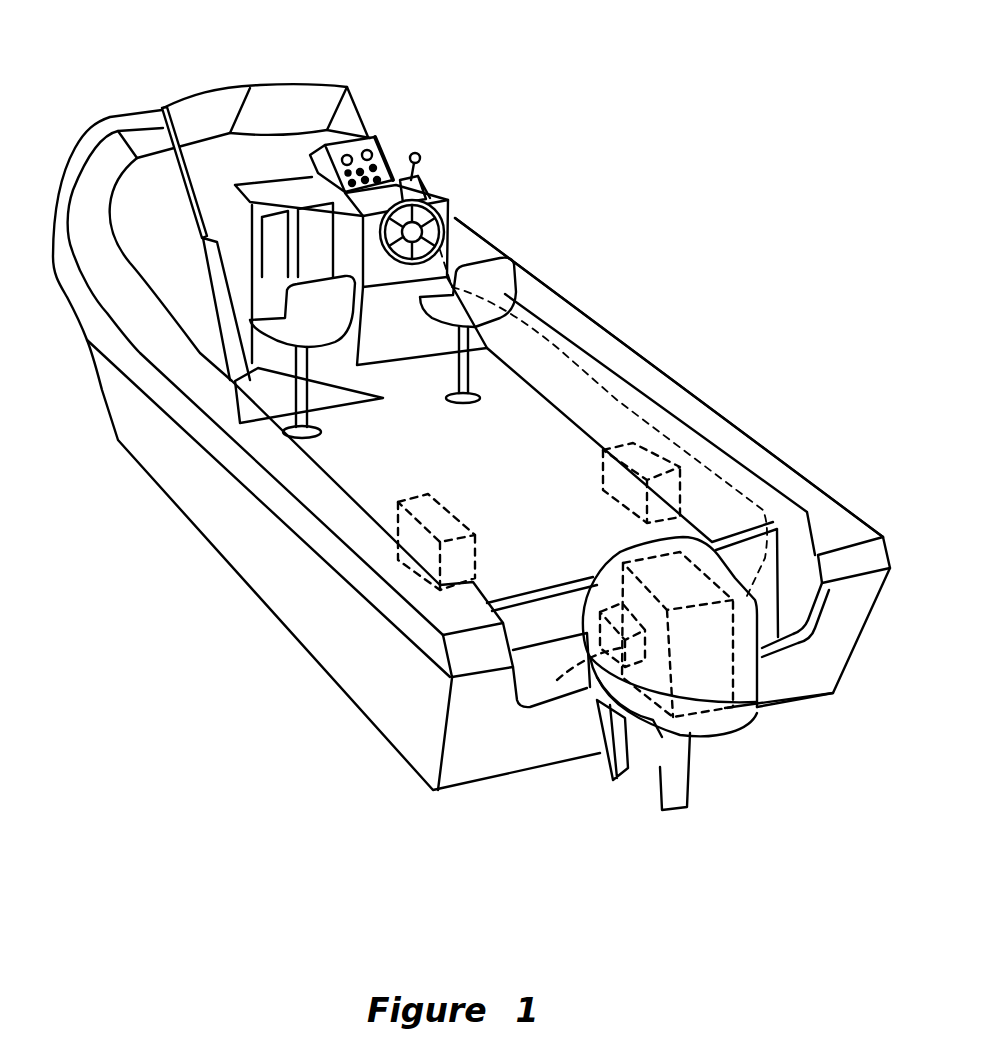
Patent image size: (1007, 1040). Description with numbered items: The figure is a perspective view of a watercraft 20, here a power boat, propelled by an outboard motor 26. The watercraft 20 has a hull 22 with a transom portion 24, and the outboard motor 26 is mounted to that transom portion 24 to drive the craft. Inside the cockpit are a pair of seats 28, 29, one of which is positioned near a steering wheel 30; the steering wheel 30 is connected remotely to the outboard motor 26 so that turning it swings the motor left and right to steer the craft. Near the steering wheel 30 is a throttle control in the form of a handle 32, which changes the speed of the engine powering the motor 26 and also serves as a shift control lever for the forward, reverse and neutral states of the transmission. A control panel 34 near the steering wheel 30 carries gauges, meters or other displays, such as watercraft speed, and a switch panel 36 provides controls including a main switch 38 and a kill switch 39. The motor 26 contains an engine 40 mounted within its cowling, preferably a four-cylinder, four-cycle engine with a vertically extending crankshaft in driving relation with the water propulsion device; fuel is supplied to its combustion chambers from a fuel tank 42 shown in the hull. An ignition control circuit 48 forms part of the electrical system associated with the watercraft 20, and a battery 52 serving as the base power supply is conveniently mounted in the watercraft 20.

The watercraft 20 is at (668, 254).
The hull 22 is at (638, 370).
The transom portion 24 is at (453, 737).
The outboard motor 26 is at (773, 771).
The seats 28 is at (507, 280).
The operator seat 29 is at (318, 340).
The steering wheel 30 is at (383, 272).
The handle 32 is at (427, 157).
The control panel 34 is at (378, 135).
The switch panel 36 is at (413, 277).
The main switch 38 is at (457, 217).
The kill switch 39 is at (456, 224).
The engine 40 is at (737, 658).
The fuel tank 42 is at (447, 530).
The ignition control circuit 48 is at (557, 680).
The battery 52 is at (660, 460).